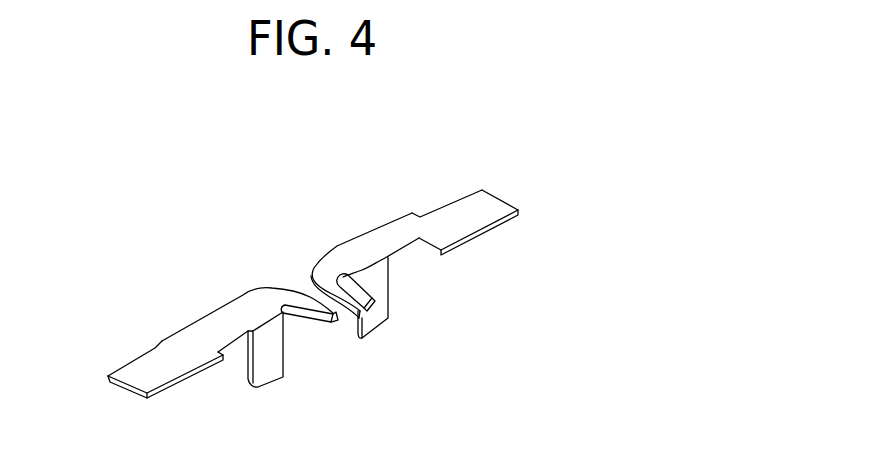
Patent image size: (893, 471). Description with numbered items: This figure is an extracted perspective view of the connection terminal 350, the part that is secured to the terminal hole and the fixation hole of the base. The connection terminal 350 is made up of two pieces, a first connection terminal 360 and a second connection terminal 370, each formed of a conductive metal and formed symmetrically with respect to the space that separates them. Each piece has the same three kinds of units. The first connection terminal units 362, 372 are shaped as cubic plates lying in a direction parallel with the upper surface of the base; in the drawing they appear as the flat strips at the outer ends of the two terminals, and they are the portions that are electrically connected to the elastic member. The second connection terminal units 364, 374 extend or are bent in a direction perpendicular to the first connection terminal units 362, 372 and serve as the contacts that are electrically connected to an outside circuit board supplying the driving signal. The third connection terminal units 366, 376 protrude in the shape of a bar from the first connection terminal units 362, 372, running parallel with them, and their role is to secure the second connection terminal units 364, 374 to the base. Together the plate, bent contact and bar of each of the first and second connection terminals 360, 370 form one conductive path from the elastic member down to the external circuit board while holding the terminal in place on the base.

The connection terminal 350 is at (541, 282).
The first connection terminal 360 is at (200, 312).
The first connection terminal unit 362 is at (143, 372).
The second connection terminal unit 364 is at (265, 386).
The third connection terminal unit 366 is at (324, 326).
The second connection terminal 370 is at (345, 239).
The first connection terminal unit 372 is at (480, 210).
The second connection terminal unit 374 is at (386, 303).
The third connection terminal unit 376 is at (370, 321).